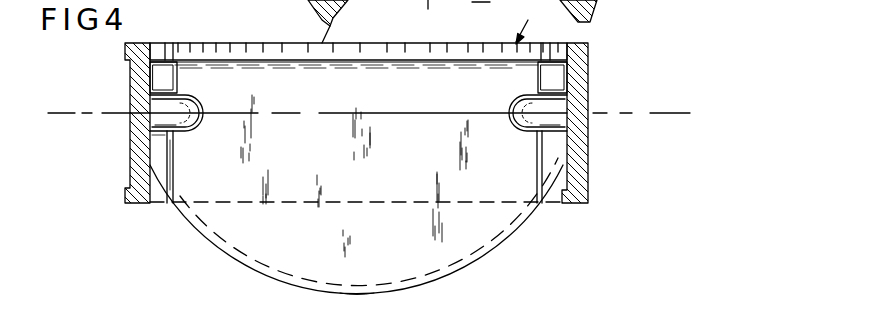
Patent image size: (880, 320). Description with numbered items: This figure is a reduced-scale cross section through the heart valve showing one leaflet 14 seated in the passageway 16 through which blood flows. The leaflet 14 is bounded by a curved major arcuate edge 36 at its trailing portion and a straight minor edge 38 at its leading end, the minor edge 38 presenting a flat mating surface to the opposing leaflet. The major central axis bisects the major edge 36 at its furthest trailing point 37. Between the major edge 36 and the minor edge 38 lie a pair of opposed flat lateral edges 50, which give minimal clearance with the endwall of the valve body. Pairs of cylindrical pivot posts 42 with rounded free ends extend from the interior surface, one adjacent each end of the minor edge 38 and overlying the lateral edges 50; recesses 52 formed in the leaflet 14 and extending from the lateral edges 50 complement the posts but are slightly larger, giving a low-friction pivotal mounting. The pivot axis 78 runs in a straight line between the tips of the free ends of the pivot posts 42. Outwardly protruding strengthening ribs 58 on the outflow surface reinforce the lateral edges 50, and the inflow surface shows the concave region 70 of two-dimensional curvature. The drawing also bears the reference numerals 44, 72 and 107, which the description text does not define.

The leaflet 14 is at (498, 250).
The passageway 16 is at (557, 204).
The major arcuate edge 36 is at (315, 22).
The furthest trailing point 37 is at (358, 295).
The minor edge 38 is at (377, 60).
The pivot post 42 is at (188, 120).
The tube wall 44 is at (203, 110).
The lateral edge 50 is at (152, 77).
The recess 52 is at (182, 95).
The strengthening rib 58 is at (172, 173).
The concave region 70 is at (366, 172).
The liquid streaks 72 is at (352, 213).
The pivot axis 78 is at (645, 112).
The arrow direction 107 is at (509, 28).